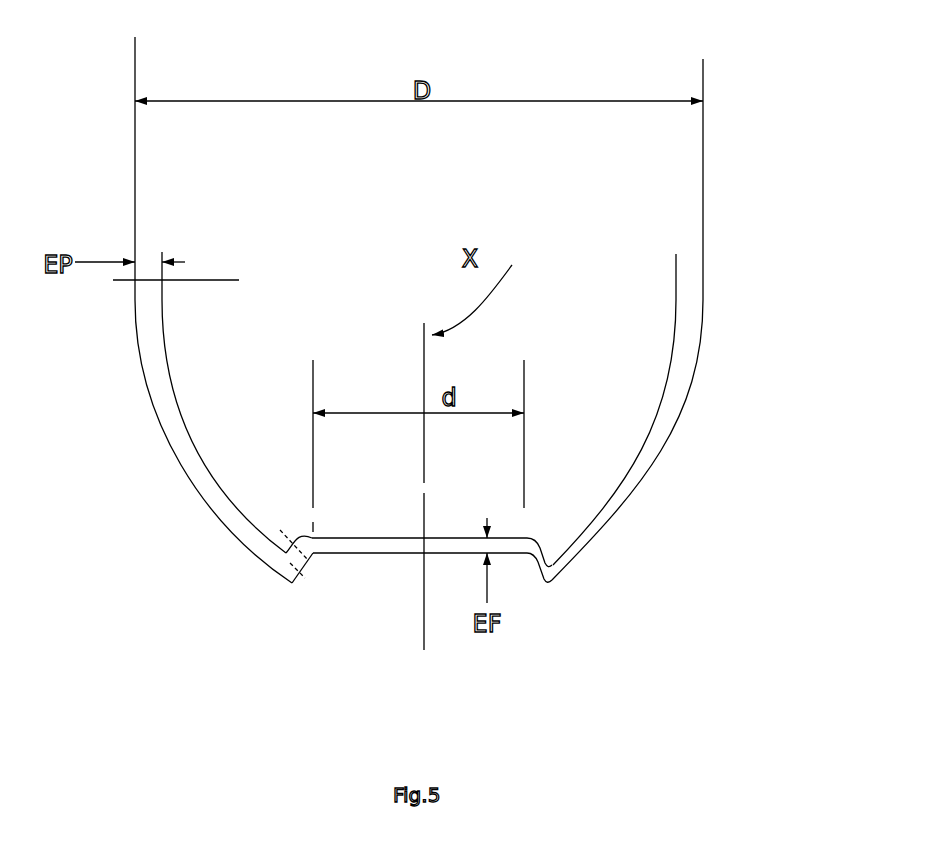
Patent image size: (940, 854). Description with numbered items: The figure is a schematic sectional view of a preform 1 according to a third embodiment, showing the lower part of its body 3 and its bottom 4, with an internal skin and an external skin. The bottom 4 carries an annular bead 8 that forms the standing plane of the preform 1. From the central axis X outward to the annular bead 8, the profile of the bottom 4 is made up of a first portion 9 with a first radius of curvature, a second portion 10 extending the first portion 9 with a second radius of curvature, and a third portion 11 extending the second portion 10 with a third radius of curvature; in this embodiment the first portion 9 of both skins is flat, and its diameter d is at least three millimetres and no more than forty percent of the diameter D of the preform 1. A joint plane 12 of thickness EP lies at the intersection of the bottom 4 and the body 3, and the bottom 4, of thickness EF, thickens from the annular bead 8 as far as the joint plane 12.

The preform 1 is at (800, 393).
The body 3 is at (712, 265).
The bottom 4 is at (647, 514).
The annular bead 8 is at (292, 590).
The first portion 9 is at (343, 521).
The second portion 10 is at (300, 529).
The third portion 11 is at (281, 536).
The joint plane 12 is at (205, 276).